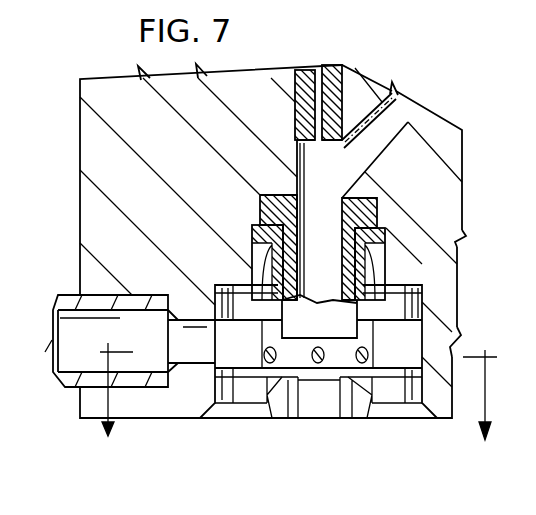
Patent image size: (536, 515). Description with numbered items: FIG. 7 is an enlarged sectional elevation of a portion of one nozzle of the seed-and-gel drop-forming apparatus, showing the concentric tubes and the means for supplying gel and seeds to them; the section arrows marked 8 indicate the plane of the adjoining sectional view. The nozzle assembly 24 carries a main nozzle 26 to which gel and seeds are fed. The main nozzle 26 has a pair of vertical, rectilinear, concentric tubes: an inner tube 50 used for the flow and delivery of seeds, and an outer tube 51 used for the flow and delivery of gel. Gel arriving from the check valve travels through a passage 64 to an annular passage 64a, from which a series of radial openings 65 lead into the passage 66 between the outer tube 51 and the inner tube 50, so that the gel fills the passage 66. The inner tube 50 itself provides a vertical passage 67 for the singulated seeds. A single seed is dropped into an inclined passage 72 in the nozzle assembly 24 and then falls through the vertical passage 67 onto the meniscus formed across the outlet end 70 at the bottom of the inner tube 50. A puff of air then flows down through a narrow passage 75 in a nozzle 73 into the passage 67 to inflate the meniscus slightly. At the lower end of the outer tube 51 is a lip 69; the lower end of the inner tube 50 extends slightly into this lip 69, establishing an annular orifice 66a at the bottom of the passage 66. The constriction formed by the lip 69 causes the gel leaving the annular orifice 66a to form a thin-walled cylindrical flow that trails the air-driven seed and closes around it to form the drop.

The nozzle assembly 24 is at (170, 152).
The main nozzle 26 is at (440, 305).
The inner tube 50 is at (378, 210).
The outer tube 51 is at (370, 250).
The passage 64 is at (183, 347).
The annular passage 64a is at (240, 343).
The radial openings 65 is at (368, 353).
The passage 66 is at (268, 424).
The annular orifice 66a is at (350, 423).
The passage 67 is at (287, 423).
The lip 69 is at (275, 422).
The outlet end 70 is at (322, 422).
The inclined passage 72 is at (407, 110).
The nozzle 73 is at (330, 72).
The narrow passage 75 is at (313, 70).
The section line 8 is at (298, 405).